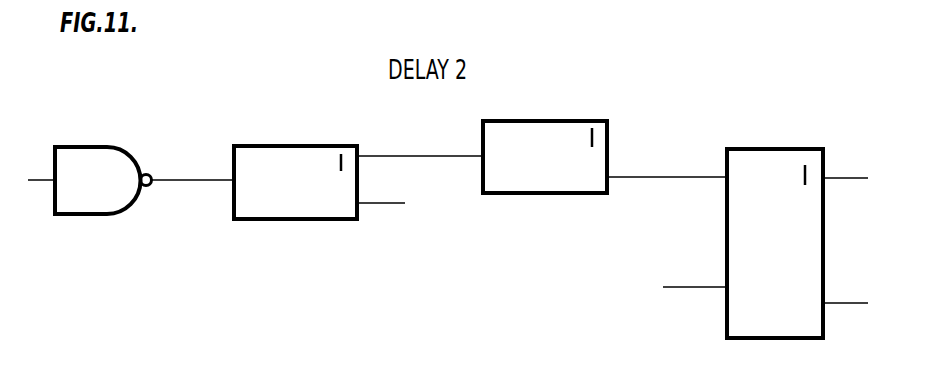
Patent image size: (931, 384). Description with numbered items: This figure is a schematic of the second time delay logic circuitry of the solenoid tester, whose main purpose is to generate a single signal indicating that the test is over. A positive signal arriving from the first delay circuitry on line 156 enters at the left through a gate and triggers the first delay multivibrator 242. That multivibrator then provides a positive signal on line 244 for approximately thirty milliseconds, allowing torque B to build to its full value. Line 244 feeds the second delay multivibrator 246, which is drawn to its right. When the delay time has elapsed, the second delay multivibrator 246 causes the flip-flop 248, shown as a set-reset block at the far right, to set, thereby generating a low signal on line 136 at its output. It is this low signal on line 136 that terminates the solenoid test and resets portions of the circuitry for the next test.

The line 156 is at (52, 182).
The first delay multivibrator 242 is at (300, 145).
The line 244 is at (425, 155).
The second delay multivibrator 246 is at (562, 121).
The flip-flop 248 is at (790, 149).
The line 136 is at (843, 306).